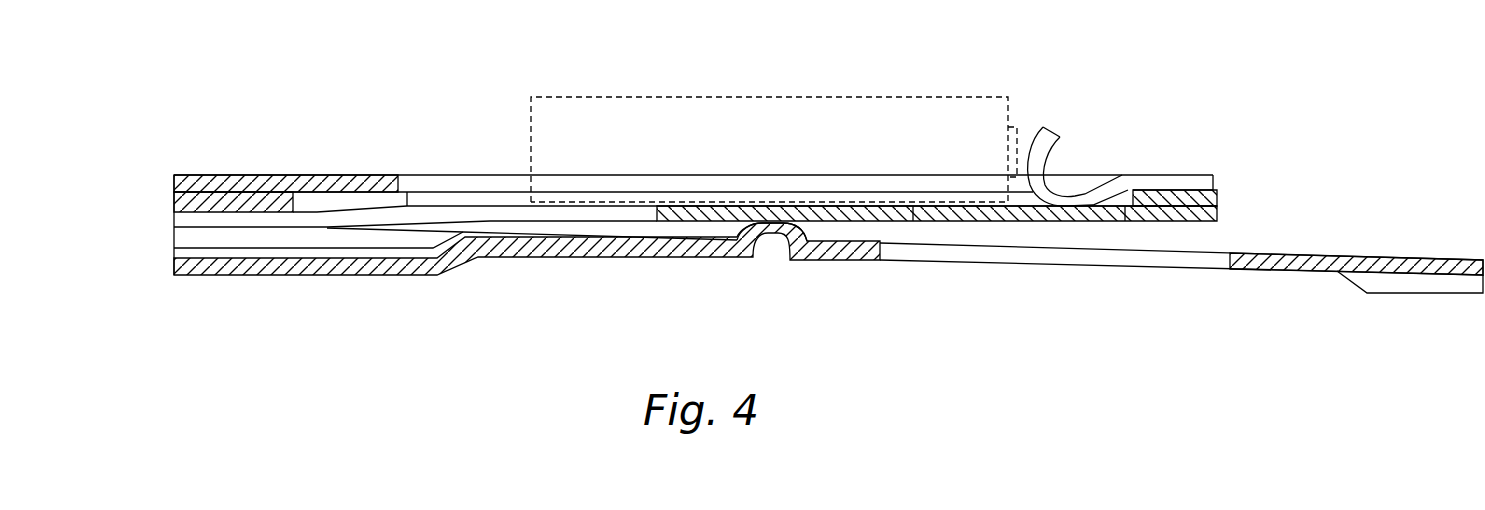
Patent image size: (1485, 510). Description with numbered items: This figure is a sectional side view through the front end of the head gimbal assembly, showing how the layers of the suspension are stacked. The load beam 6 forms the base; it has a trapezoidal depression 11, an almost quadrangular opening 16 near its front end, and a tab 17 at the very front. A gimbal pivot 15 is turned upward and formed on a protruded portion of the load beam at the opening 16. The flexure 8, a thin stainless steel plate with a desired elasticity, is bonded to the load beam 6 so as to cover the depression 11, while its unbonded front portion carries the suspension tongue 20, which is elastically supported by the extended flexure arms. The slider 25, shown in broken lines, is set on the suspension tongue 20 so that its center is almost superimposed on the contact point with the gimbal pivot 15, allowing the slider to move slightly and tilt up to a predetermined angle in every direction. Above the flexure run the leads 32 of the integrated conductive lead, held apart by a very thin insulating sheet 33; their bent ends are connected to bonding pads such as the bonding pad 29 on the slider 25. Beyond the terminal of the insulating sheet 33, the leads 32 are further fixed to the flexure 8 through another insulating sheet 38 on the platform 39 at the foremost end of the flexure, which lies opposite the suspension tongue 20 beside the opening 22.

The load beam 6 is at (565, 246).
The flexure 8 is at (307, 228).
The depression 11 is at (390, 250).
The gimbal pivot 15 is at (772, 234).
The opening 16 is at (1156, 258).
The tab 17 is at (1416, 287).
The suspension tongue 20 is at (818, 216).
The opening 22 is at (1117, 213).
The slider 25 is at (735, 122).
The bonding pad 29 is at (1016, 127).
The leads 32 is at (329, 178).
The insulating sheet 33 is at (227, 200).
The insulating sheet 38 is at (1218, 197).
The platform 39 is at (1218, 212).